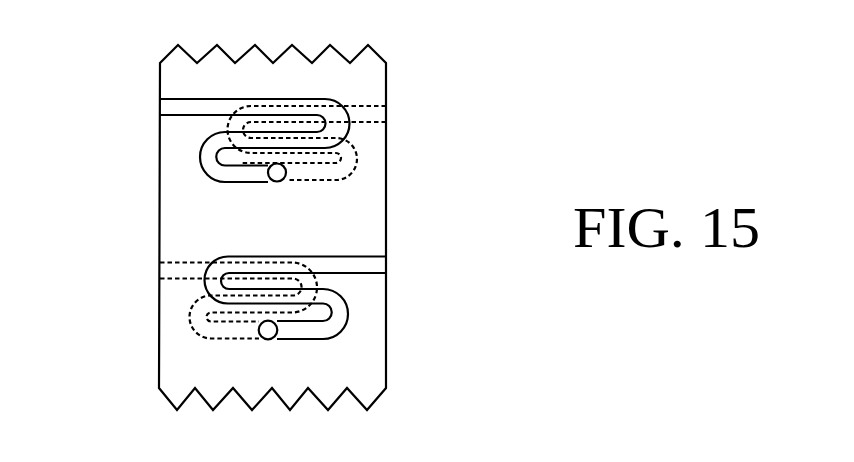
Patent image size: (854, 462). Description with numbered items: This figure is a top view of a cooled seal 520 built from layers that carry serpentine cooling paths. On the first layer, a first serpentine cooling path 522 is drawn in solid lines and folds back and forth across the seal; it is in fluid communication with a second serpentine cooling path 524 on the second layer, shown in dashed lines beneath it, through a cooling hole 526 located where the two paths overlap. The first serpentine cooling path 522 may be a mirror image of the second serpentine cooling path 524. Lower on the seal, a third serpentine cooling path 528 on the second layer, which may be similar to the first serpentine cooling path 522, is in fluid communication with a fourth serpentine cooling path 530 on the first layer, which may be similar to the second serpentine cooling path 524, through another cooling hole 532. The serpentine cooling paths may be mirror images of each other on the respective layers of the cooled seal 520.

The cooled seal 520 is at (530, 48).
The first serpentine cooling path 522 is at (333, 98).
The second serpentine cooling path 524 is at (356, 172).
The cooling hole 526 is at (278, 182).
The third serpentine cooling path 528 is at (177, 260).
The fourth serpentine cooling path 530 is at (355, 255).
The cooling hole 532 is at (268, 339).